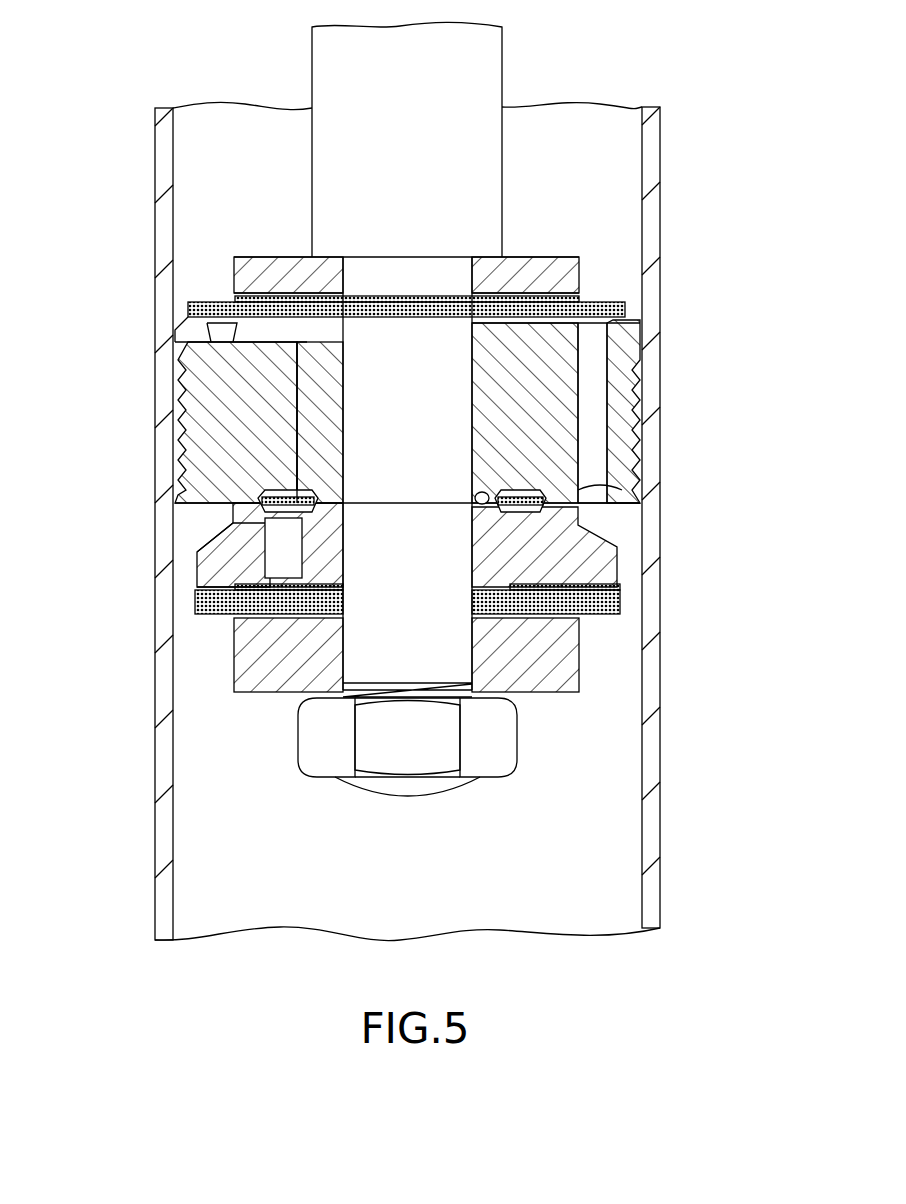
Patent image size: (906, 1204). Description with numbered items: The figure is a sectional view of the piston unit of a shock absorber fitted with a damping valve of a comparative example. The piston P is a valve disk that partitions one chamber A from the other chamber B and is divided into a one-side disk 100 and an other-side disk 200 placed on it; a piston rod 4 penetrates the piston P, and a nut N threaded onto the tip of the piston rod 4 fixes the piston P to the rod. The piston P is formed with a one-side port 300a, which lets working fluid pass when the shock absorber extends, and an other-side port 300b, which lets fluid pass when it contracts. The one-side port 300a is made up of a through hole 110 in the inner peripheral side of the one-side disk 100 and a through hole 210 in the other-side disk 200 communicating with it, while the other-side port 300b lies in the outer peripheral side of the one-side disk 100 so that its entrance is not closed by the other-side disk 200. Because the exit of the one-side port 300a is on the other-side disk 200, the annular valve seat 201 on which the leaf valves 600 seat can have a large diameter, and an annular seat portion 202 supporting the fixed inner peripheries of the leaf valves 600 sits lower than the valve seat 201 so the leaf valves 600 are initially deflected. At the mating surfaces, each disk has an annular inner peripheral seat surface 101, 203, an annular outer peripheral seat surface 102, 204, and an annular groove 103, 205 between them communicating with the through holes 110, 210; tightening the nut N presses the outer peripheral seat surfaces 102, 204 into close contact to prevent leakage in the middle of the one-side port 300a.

The piston rod 4 is at (502, 85).
The through hole 110 is at (207, 330).
The one-side disk 100 is at (622, 318).
The one-side port 300a is at (258, 414).
The other-side port 300b is at (595, 420).
The annular groove 103 is at (303, 490).
The annular groove 205 is at (518, 490).
The inner peripheral seat surface 203 is at (474, 497).
The outer peripheral seat surface 204 is at (622, 490).
The piston P is at (192, 507).
The inner peripheral seat surface 101 is at (310, 512).
The other-side disk 200 is at (625, 560).
The through hole 210 is at (272, 568).
The outer peripheral seat surface 102 is at (303, 548).
The seat portion 202 is at (320, 600).
The valve seat 201 is at (240, 610).
The leaf valves 600 is at (600, 616).
The nut N is at (497, 765).
The one chamber A is at (597, 187).
The other chamber B is at (578, 897).